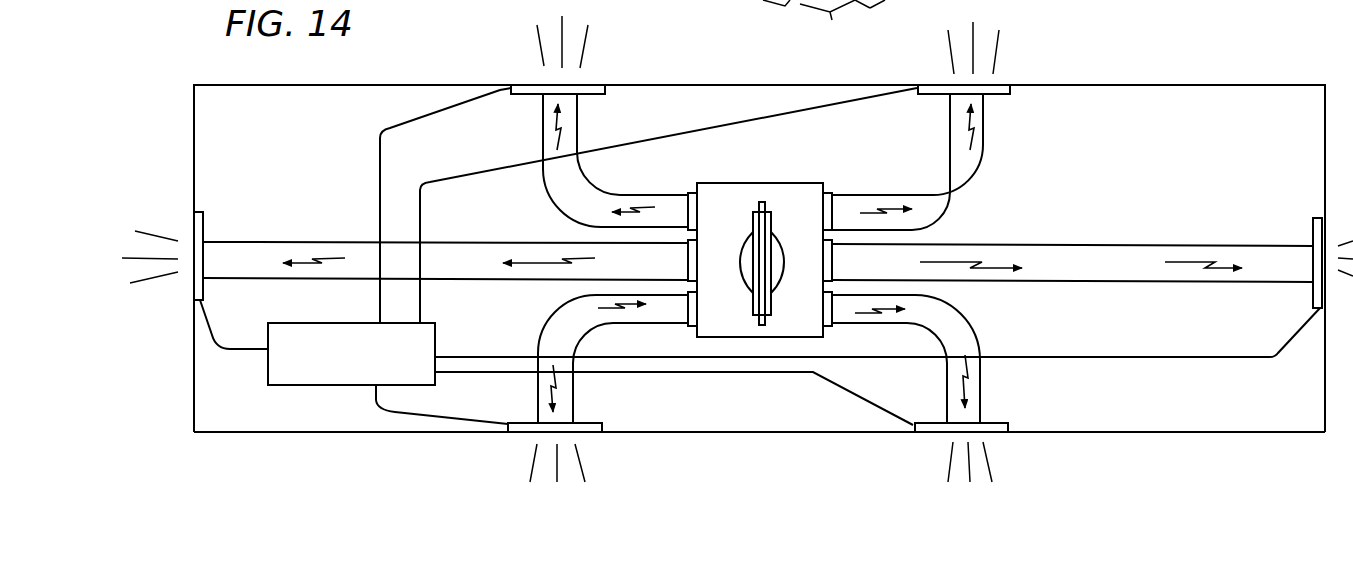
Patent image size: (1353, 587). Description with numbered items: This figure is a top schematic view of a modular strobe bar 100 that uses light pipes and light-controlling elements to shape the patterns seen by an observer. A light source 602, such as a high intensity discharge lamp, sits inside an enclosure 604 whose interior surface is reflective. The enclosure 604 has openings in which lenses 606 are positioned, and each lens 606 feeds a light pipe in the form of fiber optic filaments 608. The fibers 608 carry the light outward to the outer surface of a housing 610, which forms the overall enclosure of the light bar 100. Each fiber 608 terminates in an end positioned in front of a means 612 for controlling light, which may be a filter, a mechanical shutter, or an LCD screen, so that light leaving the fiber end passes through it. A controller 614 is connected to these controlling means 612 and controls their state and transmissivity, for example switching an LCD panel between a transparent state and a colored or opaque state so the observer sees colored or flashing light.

The modular strobe bar 100 is at (706, 82).
The light source 602 is at (778, 222).
The enclosure 604 is at (743, 183).
The lens 606 is at (837, 195).
The fiber optic filaments 608 is at (540, 127).
The housing 610 is at (1122, 437).
The means for controlling light 612 is at (203, 212).
The controller 614 is at (308, 323).